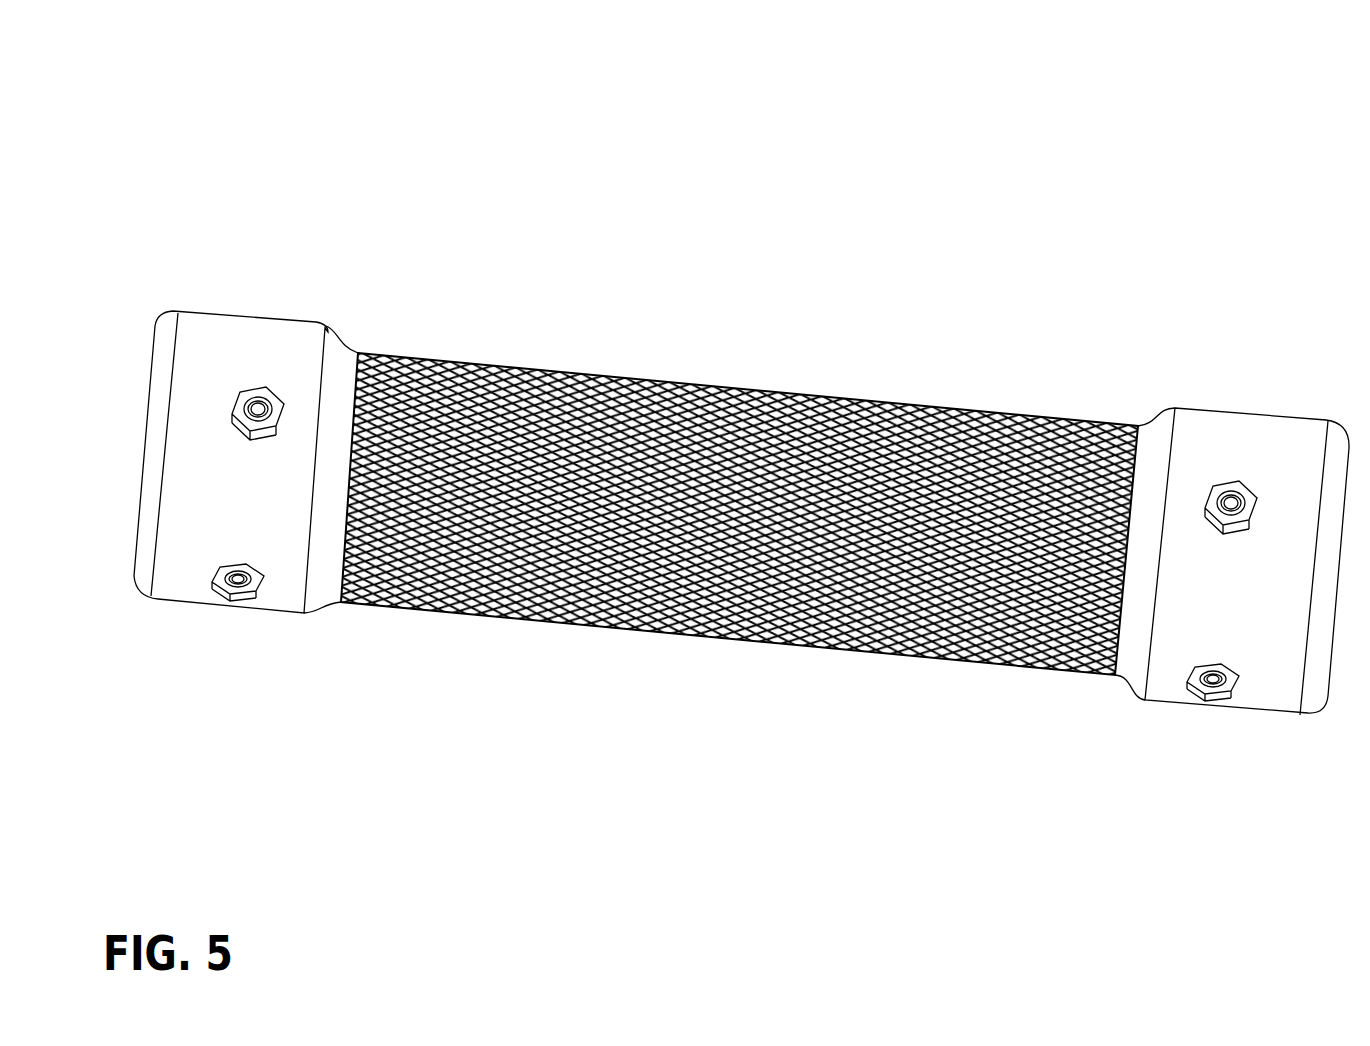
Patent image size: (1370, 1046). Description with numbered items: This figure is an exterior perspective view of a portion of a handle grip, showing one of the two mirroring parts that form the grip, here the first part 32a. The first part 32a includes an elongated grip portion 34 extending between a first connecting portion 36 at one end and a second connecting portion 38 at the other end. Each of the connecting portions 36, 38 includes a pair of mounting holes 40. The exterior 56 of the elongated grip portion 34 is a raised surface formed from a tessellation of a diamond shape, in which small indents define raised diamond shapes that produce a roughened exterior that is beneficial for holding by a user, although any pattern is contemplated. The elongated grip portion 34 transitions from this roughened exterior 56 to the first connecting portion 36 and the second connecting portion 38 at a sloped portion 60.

The first part 32a is at (377, 72).
The elongated grip portion 34 is at (727, 493).
The first connecting portion 36 is at (1178, 467).
The second connecting portion 38 is at (208, 392).
The mounting holes 40 is at (1242, 495).
The exterior 56 is at (913, 467).
The sloped portion 60 is at (340, 337).